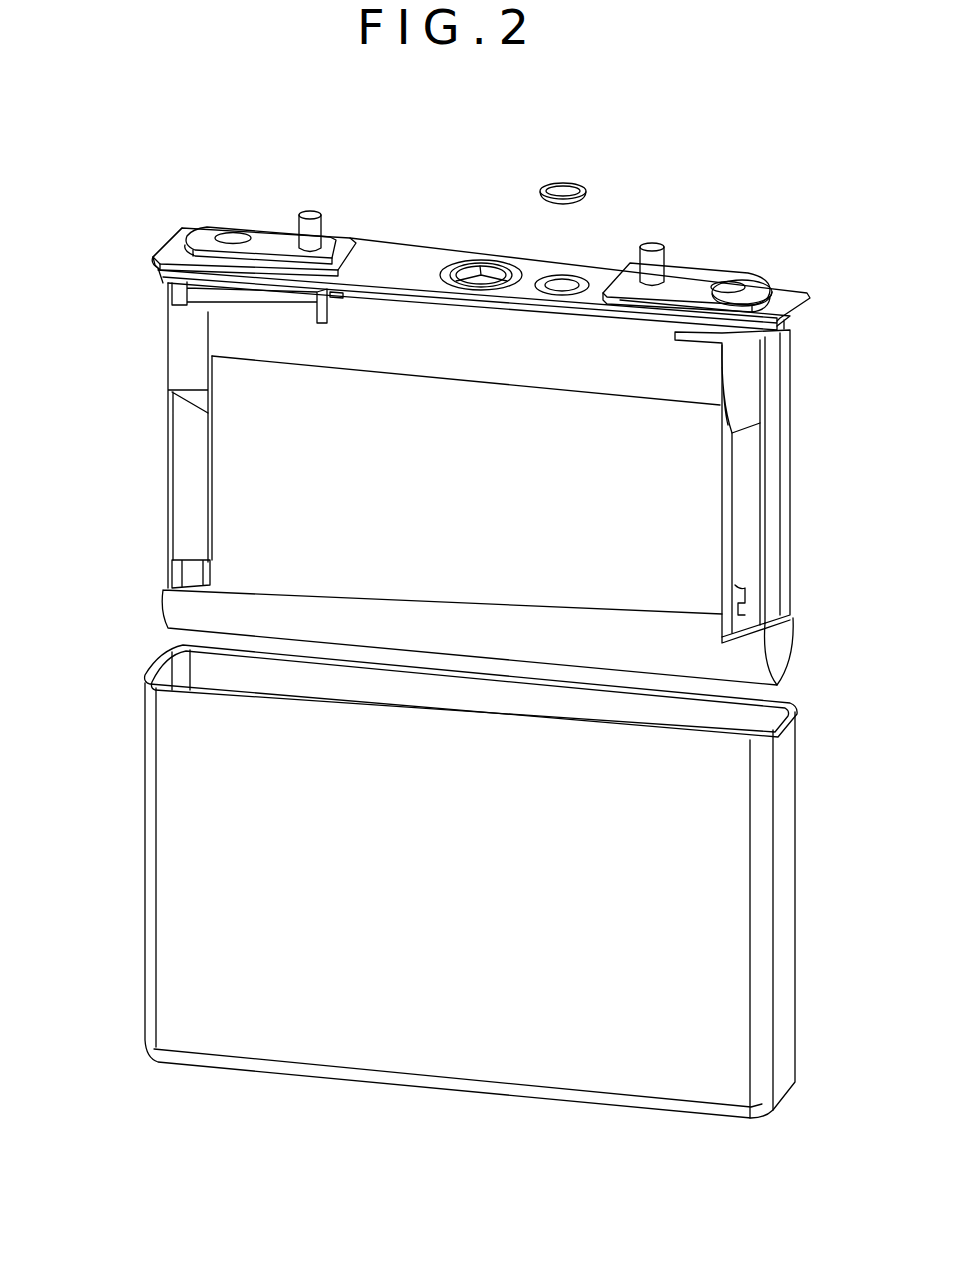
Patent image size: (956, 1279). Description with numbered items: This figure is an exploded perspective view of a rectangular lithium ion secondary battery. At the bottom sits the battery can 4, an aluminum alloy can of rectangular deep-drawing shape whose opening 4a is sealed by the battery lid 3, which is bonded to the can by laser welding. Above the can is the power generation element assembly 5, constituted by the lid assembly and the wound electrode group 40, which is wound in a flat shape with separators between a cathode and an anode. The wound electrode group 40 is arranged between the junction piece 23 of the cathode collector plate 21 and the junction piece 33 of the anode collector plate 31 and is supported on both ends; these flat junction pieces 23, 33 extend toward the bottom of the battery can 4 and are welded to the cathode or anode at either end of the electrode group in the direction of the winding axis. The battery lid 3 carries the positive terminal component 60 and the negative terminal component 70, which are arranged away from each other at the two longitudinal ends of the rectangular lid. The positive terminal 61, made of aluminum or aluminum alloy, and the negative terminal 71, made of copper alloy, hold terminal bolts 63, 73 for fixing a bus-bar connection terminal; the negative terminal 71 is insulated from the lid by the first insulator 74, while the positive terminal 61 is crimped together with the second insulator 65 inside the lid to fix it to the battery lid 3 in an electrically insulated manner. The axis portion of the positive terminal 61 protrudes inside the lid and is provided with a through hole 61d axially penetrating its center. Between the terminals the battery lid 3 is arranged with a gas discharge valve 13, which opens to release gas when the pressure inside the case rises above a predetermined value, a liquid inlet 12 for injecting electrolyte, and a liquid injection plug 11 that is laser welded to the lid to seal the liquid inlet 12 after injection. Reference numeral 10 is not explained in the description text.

The battery lid 3 is at (401, 258).
The battery can 4 is at (156, 868).
The opening 4a is at (210, 672).
The power generation element assembly 5 is at (80, 307).
The electrode body holder 10 is at (151, 333).
The liquid injection plug 11 is at (565, 186).
The liquid inlet 12 is at (565, 280).
The gas discharge valve 13 is at (476, 270).
The cathode collector plate 21 is at (160, 376).
The junction piece 23 is at (185, 480).
The anode collector plate 31 is at (777, 416).
The junction piece 33 is at (748, 518).
The wound electrode group 40 is at (207, 581).
The positive terminal component 60 is at (244, 152).
The positive terminal 61 is at (288, 250).
The through hole 61d is at (233, 235).
The terminal bolt 63 is at (309, 211).
The second insulator 65 is at (175, 283).
The negative terminal component 70 is at (755, 232).
The negative terminal 71 is at (695, 272).
The terminal bolt 73 is at (648, 243).
The first insulator 74 is at (806, 302).